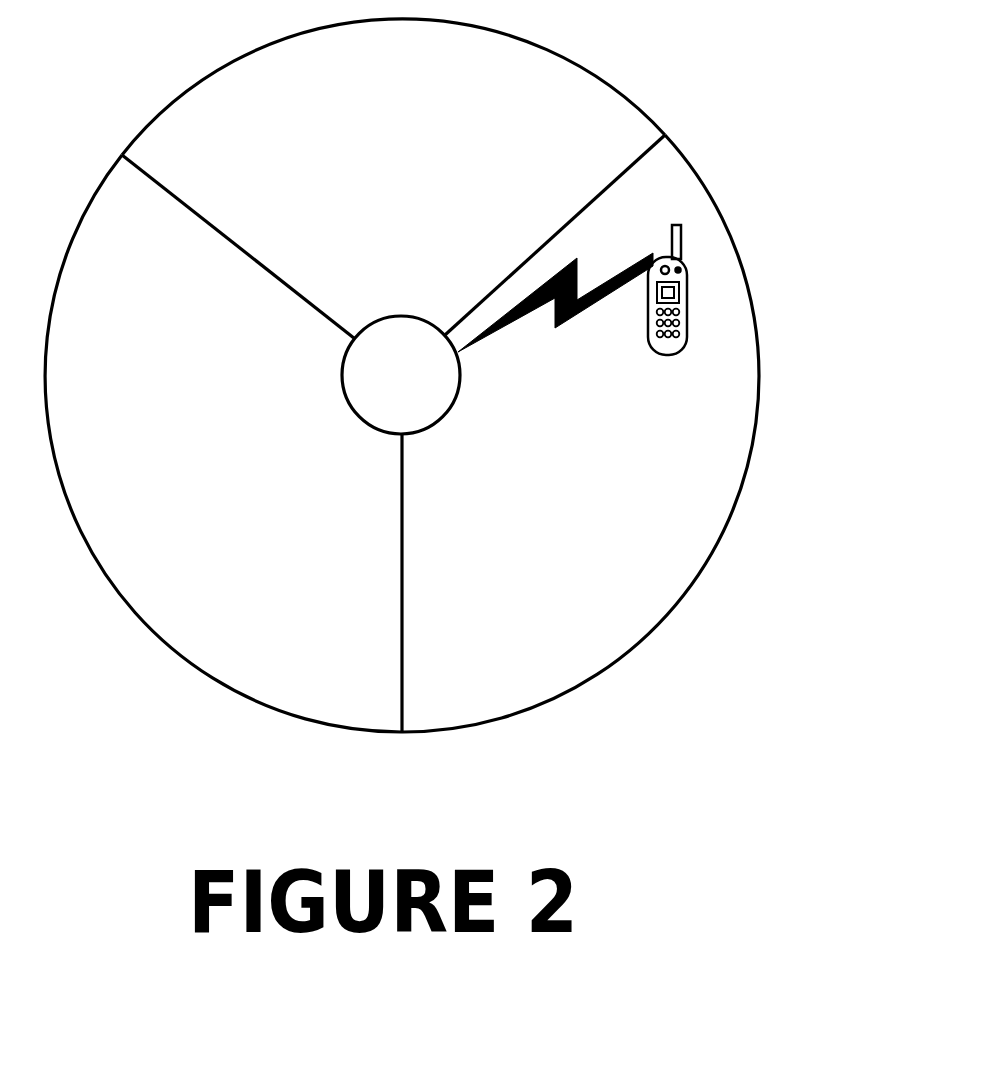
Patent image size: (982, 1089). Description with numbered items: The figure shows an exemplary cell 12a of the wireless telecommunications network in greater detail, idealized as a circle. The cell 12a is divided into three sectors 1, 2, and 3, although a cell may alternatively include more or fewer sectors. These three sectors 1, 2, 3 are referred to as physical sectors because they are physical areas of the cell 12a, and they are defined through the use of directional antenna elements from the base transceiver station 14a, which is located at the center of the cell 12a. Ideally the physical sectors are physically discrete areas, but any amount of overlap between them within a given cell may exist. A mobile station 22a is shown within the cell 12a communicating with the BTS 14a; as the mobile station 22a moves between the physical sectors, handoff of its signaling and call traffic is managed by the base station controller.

The cell 12a is at (446, 375).
The base transceiver station 14a is at (372, 409).
The mobile station 22a is at (653, 350).
The sector 1 is at (594, 495).
The sector 2 is at (238, 490).
The sector 3 is at (418, 158).